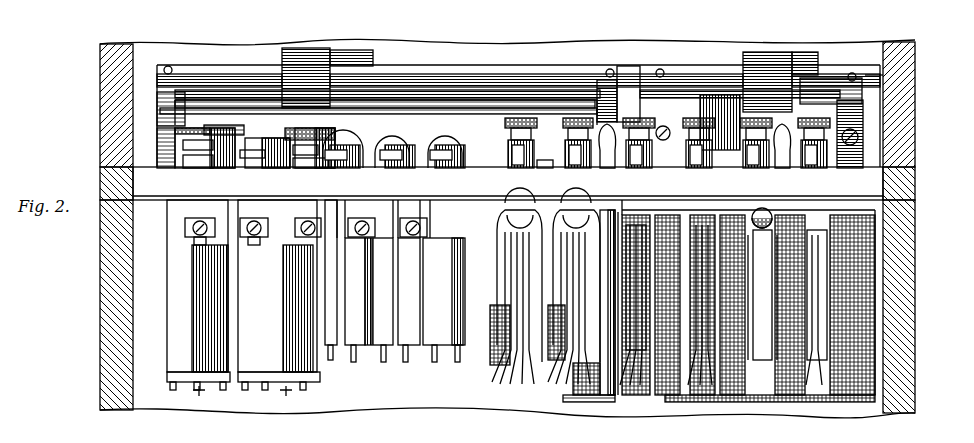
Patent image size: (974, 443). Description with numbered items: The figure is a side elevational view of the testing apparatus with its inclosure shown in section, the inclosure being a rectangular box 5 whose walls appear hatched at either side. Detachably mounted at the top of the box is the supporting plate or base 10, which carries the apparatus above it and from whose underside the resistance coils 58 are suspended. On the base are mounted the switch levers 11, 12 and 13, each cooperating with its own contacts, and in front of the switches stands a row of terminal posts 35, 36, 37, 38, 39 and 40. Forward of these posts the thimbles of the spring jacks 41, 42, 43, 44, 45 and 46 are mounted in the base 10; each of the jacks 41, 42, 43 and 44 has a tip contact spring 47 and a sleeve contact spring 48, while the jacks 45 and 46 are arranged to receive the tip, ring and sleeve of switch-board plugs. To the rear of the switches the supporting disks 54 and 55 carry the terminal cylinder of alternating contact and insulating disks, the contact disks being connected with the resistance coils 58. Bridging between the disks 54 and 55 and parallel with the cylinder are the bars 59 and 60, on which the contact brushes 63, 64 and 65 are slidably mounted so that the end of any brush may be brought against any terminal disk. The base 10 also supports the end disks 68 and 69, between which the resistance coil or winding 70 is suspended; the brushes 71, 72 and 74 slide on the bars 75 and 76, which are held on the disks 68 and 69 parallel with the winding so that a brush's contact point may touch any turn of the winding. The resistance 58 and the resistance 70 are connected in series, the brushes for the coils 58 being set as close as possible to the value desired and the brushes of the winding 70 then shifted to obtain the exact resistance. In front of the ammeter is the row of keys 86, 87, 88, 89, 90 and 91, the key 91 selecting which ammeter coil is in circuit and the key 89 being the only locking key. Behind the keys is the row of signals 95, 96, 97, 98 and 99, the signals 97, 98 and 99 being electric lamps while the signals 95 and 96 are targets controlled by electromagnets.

The rectangular box 5 is at (105, 282).
The supporting plate or base 10 is at (148, 200).
The switch lever 11 is at (607, 160).
The switch lever 12 is at (783, 160).
The switch lever 13 is at (547, 166).
The terminal post 35 is at (520, 160).
The terminal post 36 is at (580, 160).
The terminal post 37 is at (638, 160).
The terminal post 38 is at (700, 160).
The terminal post 39 is at (755, 160).
The terminal post 40 is at (815, 160).
The spring jack 41 is at (525, 362).
The spring jack 42 is at (583, 360).
The spring jack 43 is at (650, 362).
The spring jack 44 is at (708, 362).
The spring jack 45 is at (762, 362).
The spring jack 46 is at (835, 350).
The tip contact spring 47 is at (640, 380).
The sleeve contact spring 48 is at (618, 360).
The supporting disk 54 is at (650, 95).
The supporting disk 55 is at (880, 110).
The resistance coils 58 is at (740, 380).
The bar 59 is at (858, 137).
The bar 60 is at (865, 75).
The contact brush 63 is at (720, 115).
The contact brush 64 is at (760, 80).
The contact brush 65 is at (830, 95).
The end disk 68 is at (170, 100).
The end disk 69 is at (607, 95).
The resistance coil or winding 70 is at (465, 100).
The brush 71 is at (225, 130).
The brush 72 is at (282, 62).
The brush 74 is at (373, 58).
The bar 75 is at (495, 110).
The bar 76 is at (440, 75).
The key 86 is at (216, 150).
The key 87 is at (262, 150).
The key 88 is at (310, 150).
The key 89 is at (348, 162).
The key 90 is at (408, 160).
The key 91 is at (452, 160).
The signal 95 is at (190, 150).
The signal 96 is at (283, 135).
The signal 97 is at (342, 136).
The signal 98 is at (395, 140).
The signal 99 is at (435, 145).